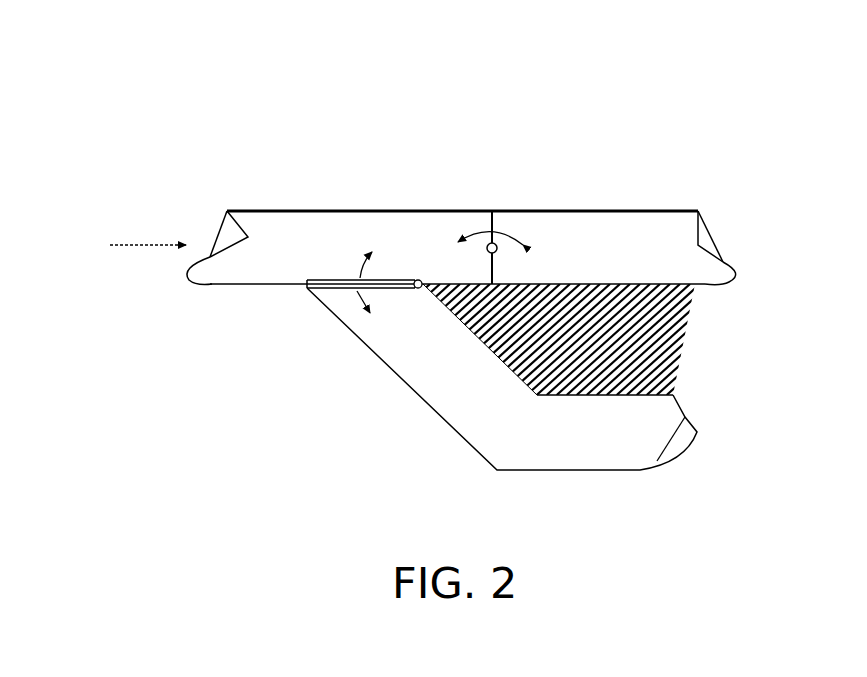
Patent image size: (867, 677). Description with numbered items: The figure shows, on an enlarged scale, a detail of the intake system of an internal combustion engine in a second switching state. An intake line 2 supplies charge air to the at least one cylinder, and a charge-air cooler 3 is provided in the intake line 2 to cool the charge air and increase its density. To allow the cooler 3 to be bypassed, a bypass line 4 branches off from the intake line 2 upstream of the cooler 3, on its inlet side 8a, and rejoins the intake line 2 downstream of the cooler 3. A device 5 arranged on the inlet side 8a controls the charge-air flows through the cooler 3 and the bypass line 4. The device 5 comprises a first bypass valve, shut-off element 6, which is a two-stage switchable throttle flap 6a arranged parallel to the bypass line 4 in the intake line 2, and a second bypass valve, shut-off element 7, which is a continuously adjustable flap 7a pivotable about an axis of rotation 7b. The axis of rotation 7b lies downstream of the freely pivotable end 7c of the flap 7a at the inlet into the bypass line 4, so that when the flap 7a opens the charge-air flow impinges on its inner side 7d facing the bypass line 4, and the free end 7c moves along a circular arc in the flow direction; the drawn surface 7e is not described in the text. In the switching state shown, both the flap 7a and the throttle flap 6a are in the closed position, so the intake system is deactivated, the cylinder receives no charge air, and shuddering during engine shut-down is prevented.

The intake line 2 is at (625, 223).
The charge-air cooler 3 is at (680, 360).
The bypass line 4 is at (477, 430).
The device 5 is at (312, 118).
The shut-off element 6 is at (520, 222).
The throttle flap 6a is at (497, 243).
The shut-off element 7 is at (357, 259).
The flap 7a is at (329, 274).
The axis of rotation 7b is at (422, 281).
The freely pivotable end 7c is at (306, 287).
The inner side 7d is at (333, 290).
The flap upper surface 7e is at (388, 280).
The inlet side 8a is at (216, 279).